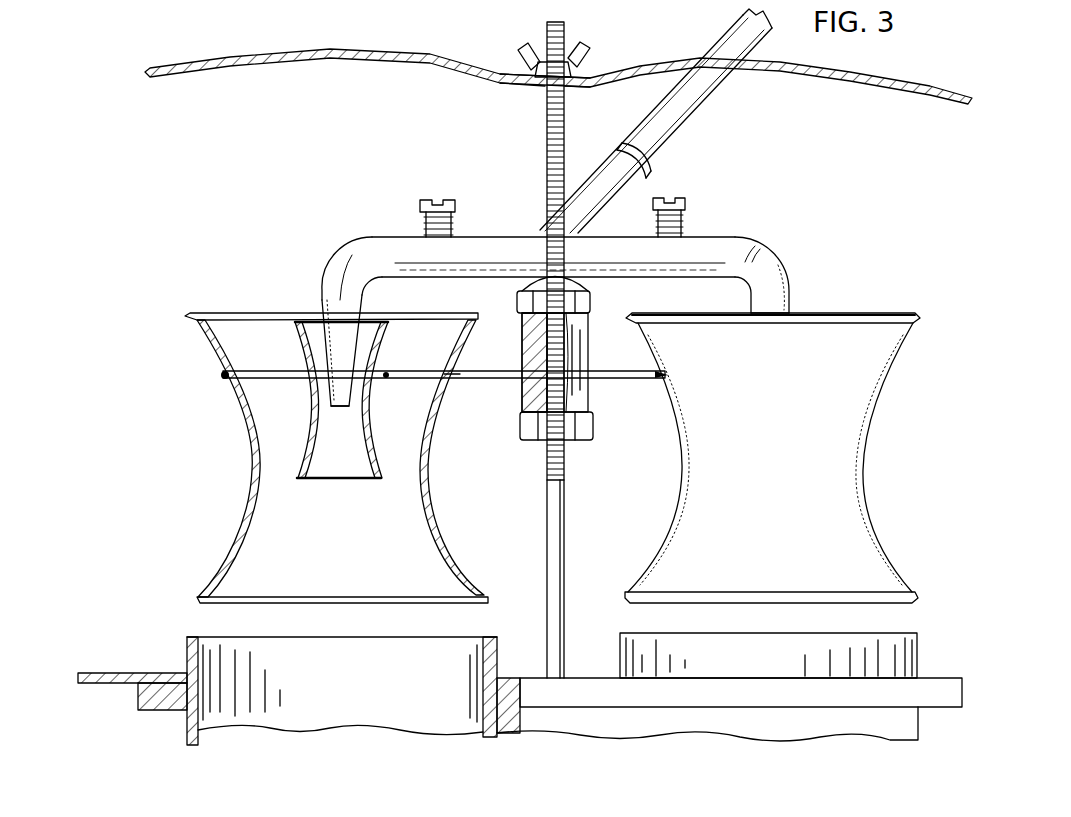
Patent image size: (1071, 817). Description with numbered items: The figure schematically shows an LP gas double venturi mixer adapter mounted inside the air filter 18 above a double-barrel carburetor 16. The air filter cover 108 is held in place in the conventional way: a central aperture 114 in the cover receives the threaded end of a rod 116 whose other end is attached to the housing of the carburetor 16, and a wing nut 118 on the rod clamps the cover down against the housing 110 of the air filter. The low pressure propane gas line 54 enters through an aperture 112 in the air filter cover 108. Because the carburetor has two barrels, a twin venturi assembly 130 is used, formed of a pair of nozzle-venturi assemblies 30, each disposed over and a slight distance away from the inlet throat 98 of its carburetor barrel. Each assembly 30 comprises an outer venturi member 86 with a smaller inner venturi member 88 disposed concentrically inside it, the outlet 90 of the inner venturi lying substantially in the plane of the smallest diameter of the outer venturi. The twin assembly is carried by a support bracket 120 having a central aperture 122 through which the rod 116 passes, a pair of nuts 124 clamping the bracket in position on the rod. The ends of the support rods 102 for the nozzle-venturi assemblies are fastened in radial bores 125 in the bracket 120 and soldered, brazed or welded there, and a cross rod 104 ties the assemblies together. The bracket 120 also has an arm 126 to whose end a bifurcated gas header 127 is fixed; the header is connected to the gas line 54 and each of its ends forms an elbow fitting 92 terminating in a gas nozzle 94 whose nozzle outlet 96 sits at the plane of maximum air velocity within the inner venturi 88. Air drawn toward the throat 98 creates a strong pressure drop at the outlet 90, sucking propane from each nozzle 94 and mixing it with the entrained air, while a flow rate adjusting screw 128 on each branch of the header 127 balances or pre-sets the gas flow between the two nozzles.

The carburetor 16 is at (515, 682).
The air filter 18 is at (235, 60).
The nozzle-venturi assembly 30 is at (282, 262).
The low pressure propane gas line 54 is at (652, 120).
The outer venturi member 86 is at (433, 490).
The inner venturi member 88 is at (318, 434).
The outlet of the inner venturi member 90 is at (343, 479).
The elbow fitting 92 is at (326, 293).
The gas nozzle 94 is at (362, 395).
The nozzle outlet 96 is at (341, 408).
The inlet throat 98 is at (404, 655).
The support rods 102 is at (455, 371).
The cross rod 104 is at (450, 371).
The air filter cover 108 is at (483, 47).
The housing of the air filter 110 is at (125, 673).
The aperture 112 is at (700, 62).
The central aperture 114 is at (548, 94).
The rod 116 is at (565, 563).
The wing nut 118 is at (586, 55).
The support bracket 120 is at (523, 396).
The central aperture 122 is at (578, 390).
The nuts 124 is at (592, 302).
The radial bores 125 is at (528, 381).
The arm 126 is at (538, 278).
The bifurcated gas header 127 is at (398, 237).
The flow rate adjusting screw 128 is at (455, 201).
The twin venturi assembly 130 is at (430, 178).